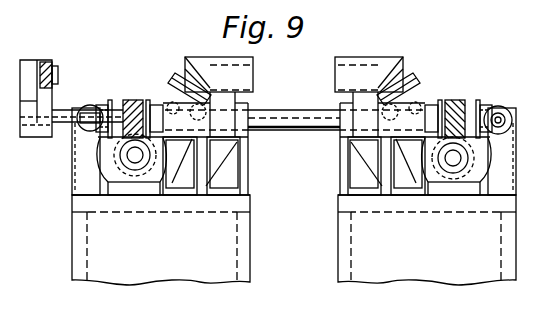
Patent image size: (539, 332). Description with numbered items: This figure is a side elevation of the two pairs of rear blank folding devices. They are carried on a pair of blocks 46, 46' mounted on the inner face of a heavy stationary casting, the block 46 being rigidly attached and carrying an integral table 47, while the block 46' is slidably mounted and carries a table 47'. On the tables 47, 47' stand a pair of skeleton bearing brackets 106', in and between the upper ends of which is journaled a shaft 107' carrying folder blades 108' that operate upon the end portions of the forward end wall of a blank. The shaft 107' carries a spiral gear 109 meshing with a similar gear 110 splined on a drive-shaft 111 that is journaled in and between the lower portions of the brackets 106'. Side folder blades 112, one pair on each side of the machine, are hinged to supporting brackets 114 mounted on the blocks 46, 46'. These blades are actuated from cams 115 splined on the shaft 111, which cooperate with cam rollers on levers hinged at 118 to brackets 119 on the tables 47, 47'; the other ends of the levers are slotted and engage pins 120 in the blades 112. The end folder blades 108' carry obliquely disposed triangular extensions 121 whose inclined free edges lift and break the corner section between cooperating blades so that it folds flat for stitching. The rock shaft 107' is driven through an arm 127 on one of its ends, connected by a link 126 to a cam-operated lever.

The block 46 is at (161, 240).
The block 46' is at (427, 240).
The table 47 is at (161, 218).
The table 47' is at (427, 219).
The skeleton bearing bracket 106' is at (299, 212).
The shaft 107' is at (294, 108).
The folder blade 108' is at (342, 97).
The spiral gear 109 is at (124, 100).
The spiral gear 110 is at (108, 146).
The drive-shaft 111 is at (133, 155).
The side folder blade 112 is at (174, 82).
The supporting bracket 114 is at (294, 166).
The cam 115 is at (115, 168).
The hinge 118 is at (86, 106).
The bracket 119 is at (87, 178).
The pin 120 is at (166, 101).
The triangular extension 121 is at (188, 62).
The link 126 is at (44, 62).
The arm 127 is at (22, 72).